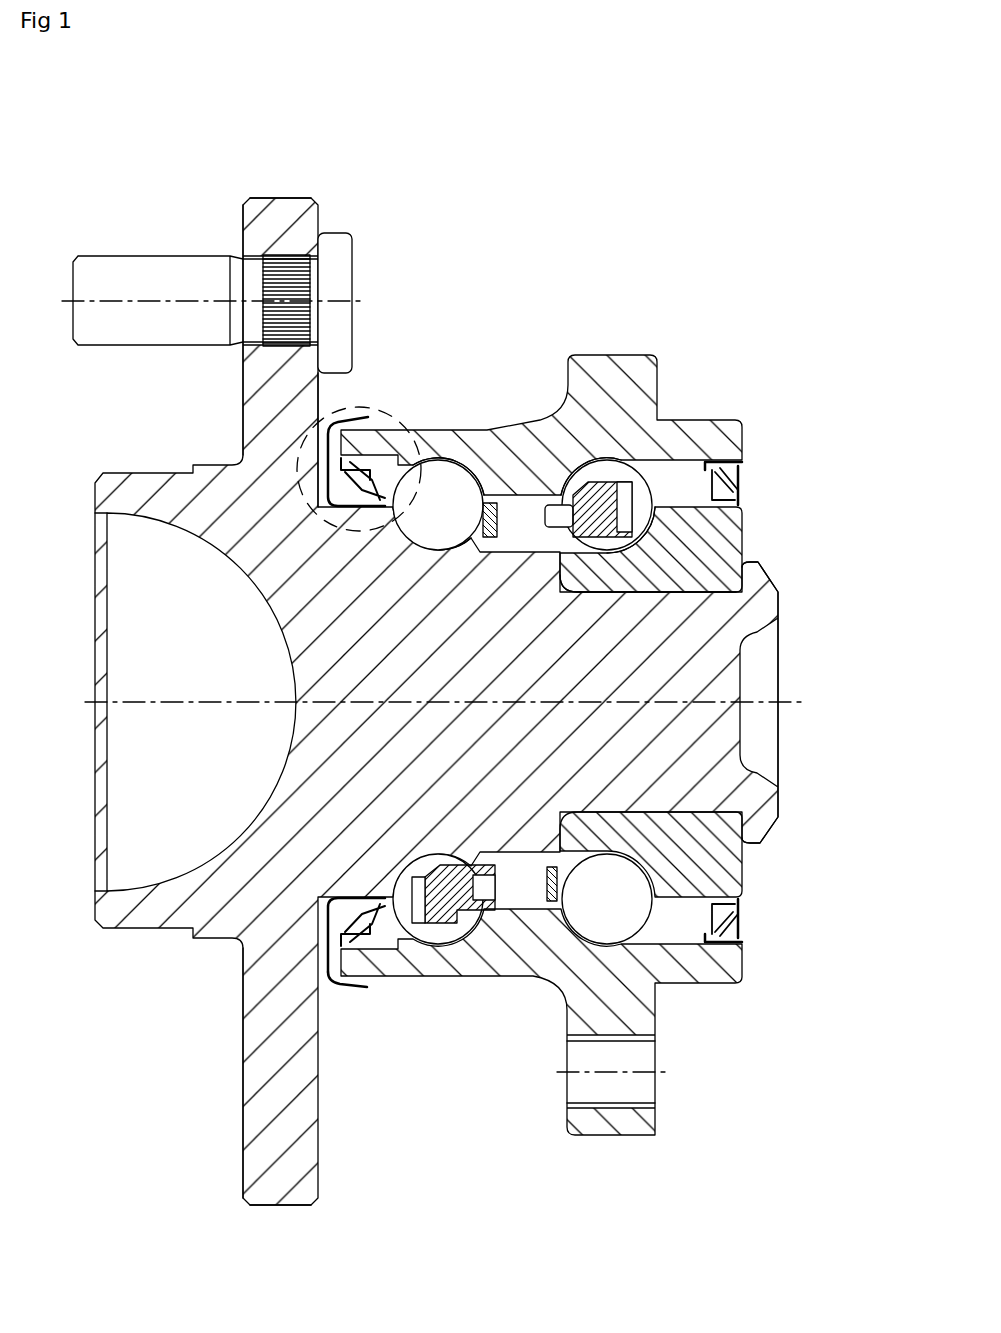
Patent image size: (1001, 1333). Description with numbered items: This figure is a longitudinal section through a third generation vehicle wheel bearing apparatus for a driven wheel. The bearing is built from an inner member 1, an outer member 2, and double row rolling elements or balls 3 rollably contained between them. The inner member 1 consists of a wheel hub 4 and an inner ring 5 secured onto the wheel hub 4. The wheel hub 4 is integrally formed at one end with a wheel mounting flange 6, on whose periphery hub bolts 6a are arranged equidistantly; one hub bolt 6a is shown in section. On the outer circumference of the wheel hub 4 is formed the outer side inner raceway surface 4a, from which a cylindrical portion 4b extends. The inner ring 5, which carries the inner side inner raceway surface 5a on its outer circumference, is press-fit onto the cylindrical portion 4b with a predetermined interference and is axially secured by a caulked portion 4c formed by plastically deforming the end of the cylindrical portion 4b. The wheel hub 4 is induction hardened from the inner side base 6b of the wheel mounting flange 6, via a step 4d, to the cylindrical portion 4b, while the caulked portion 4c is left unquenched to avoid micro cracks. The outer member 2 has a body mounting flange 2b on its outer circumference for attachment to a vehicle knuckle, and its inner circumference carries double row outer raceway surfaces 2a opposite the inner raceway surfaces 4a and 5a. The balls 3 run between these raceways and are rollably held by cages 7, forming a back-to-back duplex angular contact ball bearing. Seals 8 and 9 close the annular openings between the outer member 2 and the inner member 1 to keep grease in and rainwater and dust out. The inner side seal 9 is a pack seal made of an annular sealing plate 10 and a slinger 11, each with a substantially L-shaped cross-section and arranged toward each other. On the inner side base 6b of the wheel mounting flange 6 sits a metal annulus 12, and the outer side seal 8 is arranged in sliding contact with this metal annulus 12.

The inner member 1 is at (142, 583).
The outer member 2 is at (598, 373).
The outer raceway surface 2a is at (443, 485).
The body mounting flange 2b is at (620, 1128).
The rolling elements (balls) 3 is at (445, 937).
The wheel hub 4 is at (283, 607).
The inner raceway surface 4a is at (438, 527).
The cylindrical portion 4b is at (668, 585).
The caulked portion 4c is at (755, 575).
The step 4d is at (565, 585).
The inner ring 5 is at (712, 533).
The inner raceway surface 5a is at (612, 545).
The wheel mounting flange 6 is at (278, 208).
The hub bolt 6a is at (152, 270).
The inner side base 6b is at (322, 452).
The cage 7 is at (555, 870).
The outer side seal 8 is at (322, 942).
The inner side seal 9 is at (767, 721).
The annular sealing plate 10 is at (745, 948).
The slinger 11 is at (752, 920).
The metal annulus 12 is at (364, 992).